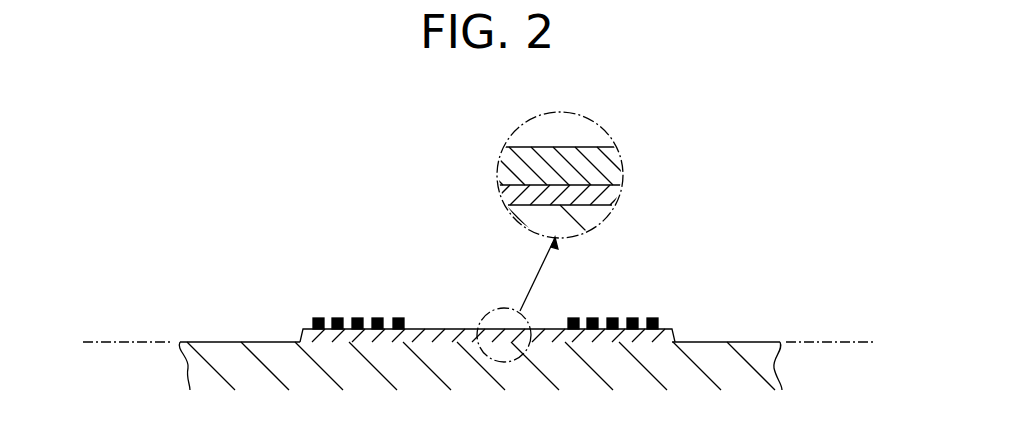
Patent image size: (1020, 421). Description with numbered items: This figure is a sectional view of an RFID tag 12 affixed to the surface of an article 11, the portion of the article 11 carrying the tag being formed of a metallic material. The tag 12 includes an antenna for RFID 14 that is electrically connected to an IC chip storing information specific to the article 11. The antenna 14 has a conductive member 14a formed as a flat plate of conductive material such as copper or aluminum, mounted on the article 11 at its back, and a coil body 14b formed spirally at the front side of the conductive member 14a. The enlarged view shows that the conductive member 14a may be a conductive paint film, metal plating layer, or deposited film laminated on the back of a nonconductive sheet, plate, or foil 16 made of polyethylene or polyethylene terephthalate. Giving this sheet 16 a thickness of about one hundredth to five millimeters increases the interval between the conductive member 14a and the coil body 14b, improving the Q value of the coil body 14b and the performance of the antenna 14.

The article 11 is at (755, 342).
The RFID tag 12 is at (110, 192).
The antenna for RFID 14 is at (447, 260).
The conductive member 14a is at (455, 329).
The coil body 14b is at (485, 280).
The nonconductive sheet, plate, or foil 16 is at (603, 158).